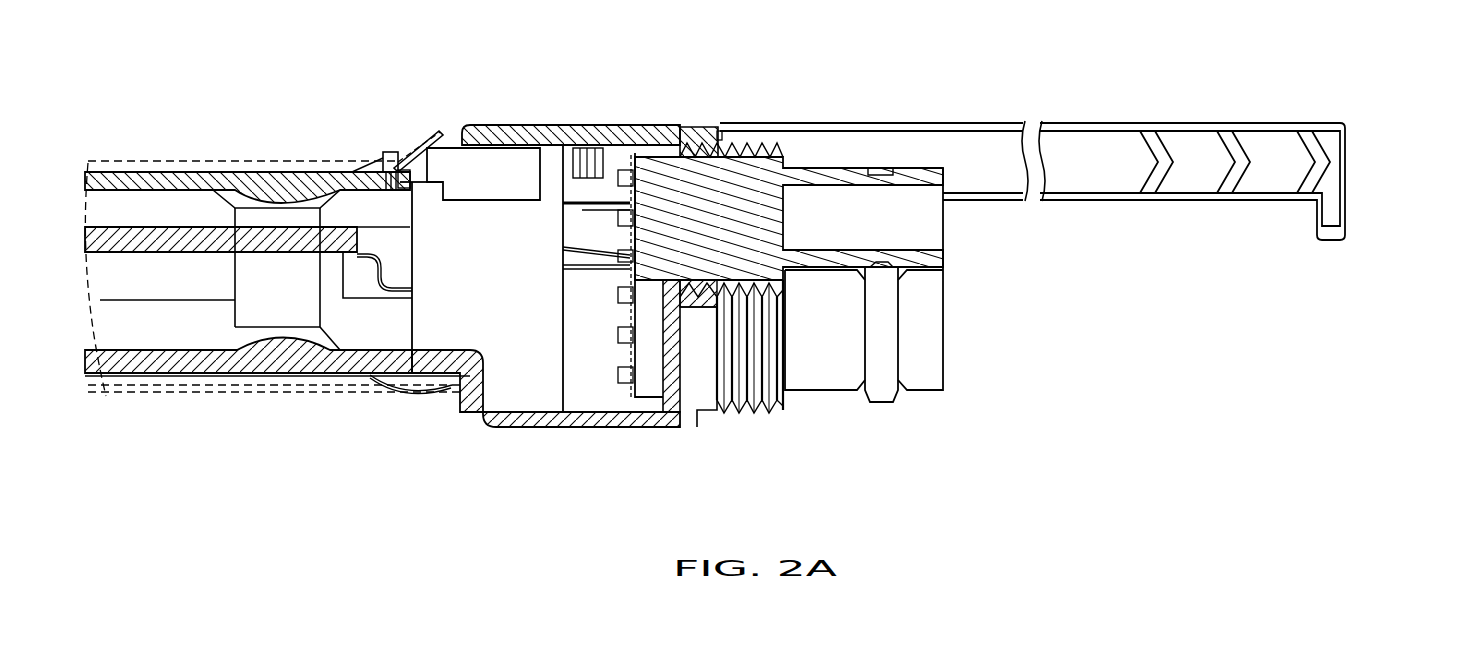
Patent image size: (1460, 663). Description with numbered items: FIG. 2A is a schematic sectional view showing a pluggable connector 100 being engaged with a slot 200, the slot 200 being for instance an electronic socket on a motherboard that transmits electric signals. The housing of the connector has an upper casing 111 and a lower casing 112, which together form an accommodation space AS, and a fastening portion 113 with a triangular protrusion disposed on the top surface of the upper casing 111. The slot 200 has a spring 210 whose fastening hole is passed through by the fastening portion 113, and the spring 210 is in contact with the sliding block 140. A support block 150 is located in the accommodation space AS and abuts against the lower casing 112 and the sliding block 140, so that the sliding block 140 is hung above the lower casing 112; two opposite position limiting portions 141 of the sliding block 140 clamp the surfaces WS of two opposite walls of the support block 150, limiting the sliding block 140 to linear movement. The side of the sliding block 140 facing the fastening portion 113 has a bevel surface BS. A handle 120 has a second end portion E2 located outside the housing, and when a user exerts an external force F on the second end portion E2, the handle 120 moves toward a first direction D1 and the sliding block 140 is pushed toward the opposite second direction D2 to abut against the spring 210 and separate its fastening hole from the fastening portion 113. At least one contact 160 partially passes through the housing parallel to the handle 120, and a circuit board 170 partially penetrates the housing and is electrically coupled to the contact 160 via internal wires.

The pluggable connector 100 is at (1245, 381).
The upper casing 111 is at (180, 178).
The lower casing 112 is at (206, 366).
The fastening portion 113 is at (388, 152).
The handle 120 is at (1073, 143).
The sliding block 140 is at (516, 157).
The position limiting portions 141 is at (493, 201).
The support block 150 is at (517, 340).
The contact 160 is at (827, 378).
The circuit board 170 is at (173, 248).
The slot 200 is at (257, 165).
The spring 210 is at (426, 130).
The accommodation space AS is at (123, 327).
The bevel surface BS is at (426, 165).
The surfaces of the support block walls WS is at (445, 326).
The first direction D1 is at (499, 191).
The second direction D2 is at (878, 61).
The external force F is at (1362, 181).
The second end portion E2 is at (1286, 212).